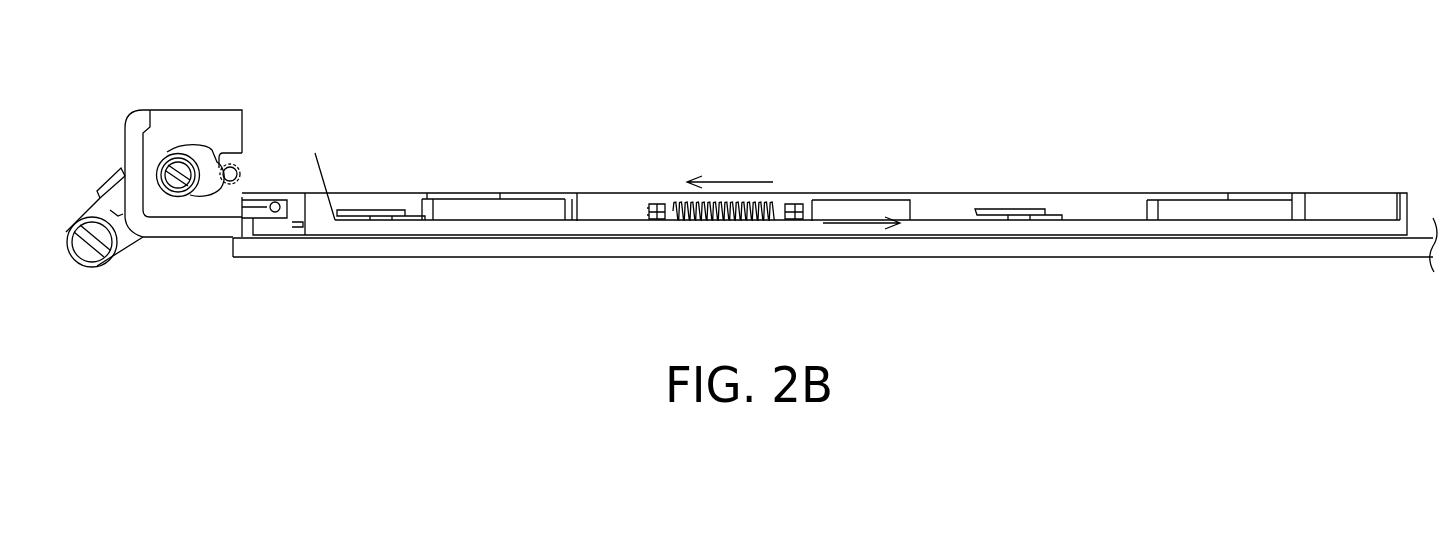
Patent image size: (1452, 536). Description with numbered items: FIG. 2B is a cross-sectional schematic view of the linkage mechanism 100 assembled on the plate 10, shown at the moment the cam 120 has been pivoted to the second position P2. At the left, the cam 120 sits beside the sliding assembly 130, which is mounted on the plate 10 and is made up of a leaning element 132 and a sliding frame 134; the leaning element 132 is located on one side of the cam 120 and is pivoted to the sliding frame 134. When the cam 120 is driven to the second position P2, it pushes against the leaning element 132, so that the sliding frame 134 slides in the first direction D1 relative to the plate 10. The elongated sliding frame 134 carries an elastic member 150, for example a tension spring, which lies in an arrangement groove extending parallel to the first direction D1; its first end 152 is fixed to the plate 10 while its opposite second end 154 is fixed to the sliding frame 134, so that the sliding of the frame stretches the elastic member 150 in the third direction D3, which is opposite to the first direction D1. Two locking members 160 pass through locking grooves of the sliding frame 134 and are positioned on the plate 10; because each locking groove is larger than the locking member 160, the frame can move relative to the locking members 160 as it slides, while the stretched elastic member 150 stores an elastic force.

The plate 10 is at (1148, 245).
The linkage mechanism 100 is at (830, 214).
The cam 120 is at (200, 157).
The sliding assembly 130 is at (285, 256).
The leaning element 132 is at (233, 185).
The sliding frame 134 is at (335, 227).
The elastic member 150 is at (725, 213).
The first end 152 is at (652, 203).
The second end 154 is at (798, 203).
The locking member 160 is at (1017, 212).
The first direction D1 is at (862, 226).
The third direction D3 is at (730, 167).
The second position P2 is at (1402, 67).